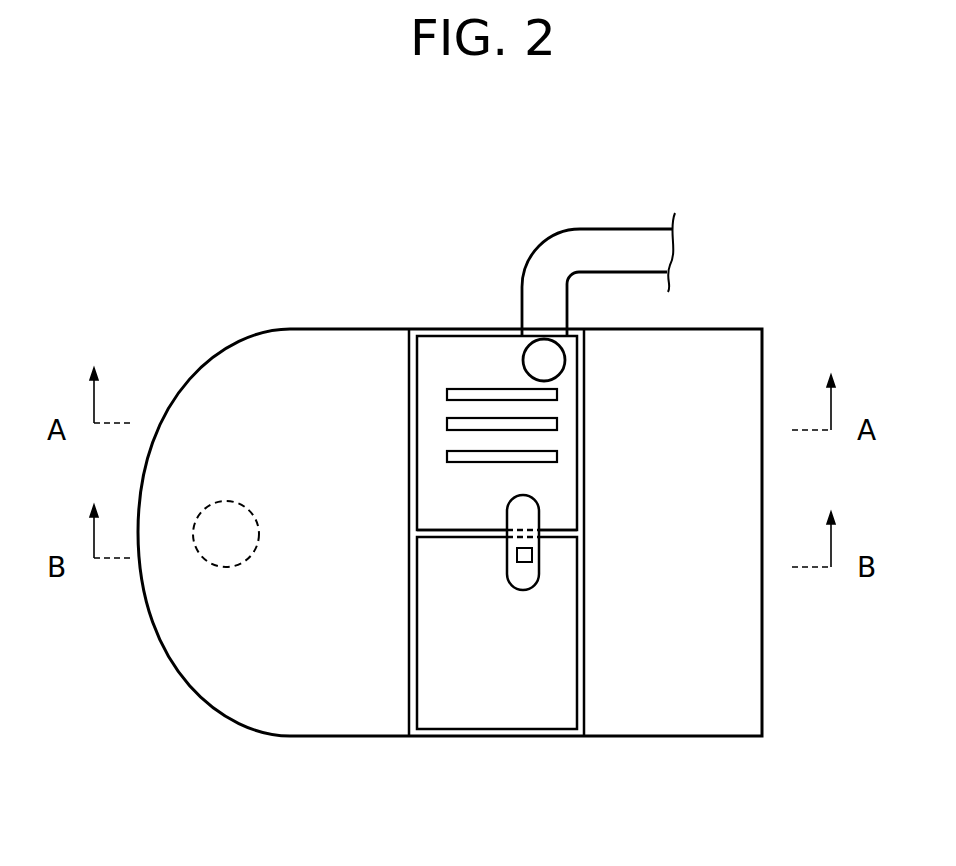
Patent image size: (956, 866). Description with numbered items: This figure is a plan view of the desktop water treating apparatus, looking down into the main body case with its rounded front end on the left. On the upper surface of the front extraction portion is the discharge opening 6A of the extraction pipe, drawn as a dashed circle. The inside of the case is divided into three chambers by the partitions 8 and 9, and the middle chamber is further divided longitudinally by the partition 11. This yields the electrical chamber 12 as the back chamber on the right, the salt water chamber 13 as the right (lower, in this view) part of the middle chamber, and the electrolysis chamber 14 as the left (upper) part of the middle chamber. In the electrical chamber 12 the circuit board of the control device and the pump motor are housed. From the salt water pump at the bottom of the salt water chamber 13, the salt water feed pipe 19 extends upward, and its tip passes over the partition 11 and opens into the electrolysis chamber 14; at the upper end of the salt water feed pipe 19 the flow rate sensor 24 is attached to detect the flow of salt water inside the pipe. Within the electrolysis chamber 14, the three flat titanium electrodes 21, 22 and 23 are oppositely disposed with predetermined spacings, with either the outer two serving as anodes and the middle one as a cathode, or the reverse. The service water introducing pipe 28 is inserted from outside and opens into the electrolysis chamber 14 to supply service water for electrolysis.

The discharge opening 6A is at (198, 511).
The partition 8 is at (409, 632).
The partition 9 is at (585, 633).
The partition 11 is at (433, 528).
The electrical chamber 12 is at (742, 645).
The salt water chamber 13 is at (500, 713).
The electrolysis chamber 14 is at (470, 347).
The salt water feed pipe 19 is at (513, 589).
The electrode 21 is at (446, 388).
The electrode 22 is at (447, 424).
The electrode 23 is at (447, 456).
The flow rate sensor 24 is at (533, 554).
The service water introducing pipe 28 is at (624, 229).